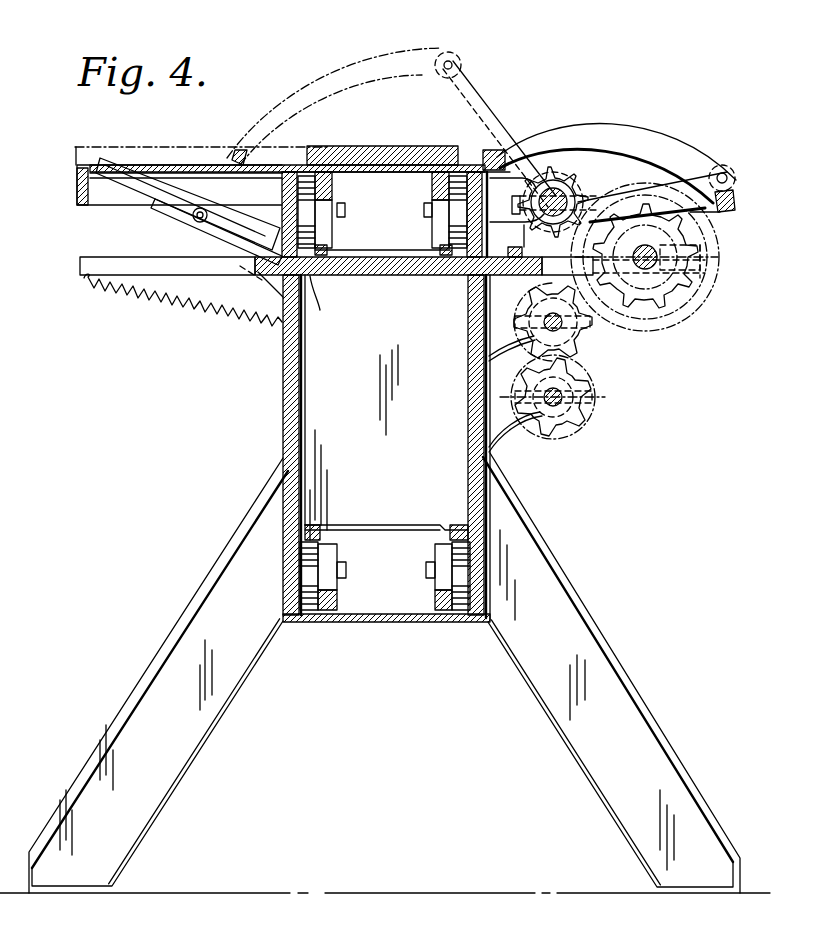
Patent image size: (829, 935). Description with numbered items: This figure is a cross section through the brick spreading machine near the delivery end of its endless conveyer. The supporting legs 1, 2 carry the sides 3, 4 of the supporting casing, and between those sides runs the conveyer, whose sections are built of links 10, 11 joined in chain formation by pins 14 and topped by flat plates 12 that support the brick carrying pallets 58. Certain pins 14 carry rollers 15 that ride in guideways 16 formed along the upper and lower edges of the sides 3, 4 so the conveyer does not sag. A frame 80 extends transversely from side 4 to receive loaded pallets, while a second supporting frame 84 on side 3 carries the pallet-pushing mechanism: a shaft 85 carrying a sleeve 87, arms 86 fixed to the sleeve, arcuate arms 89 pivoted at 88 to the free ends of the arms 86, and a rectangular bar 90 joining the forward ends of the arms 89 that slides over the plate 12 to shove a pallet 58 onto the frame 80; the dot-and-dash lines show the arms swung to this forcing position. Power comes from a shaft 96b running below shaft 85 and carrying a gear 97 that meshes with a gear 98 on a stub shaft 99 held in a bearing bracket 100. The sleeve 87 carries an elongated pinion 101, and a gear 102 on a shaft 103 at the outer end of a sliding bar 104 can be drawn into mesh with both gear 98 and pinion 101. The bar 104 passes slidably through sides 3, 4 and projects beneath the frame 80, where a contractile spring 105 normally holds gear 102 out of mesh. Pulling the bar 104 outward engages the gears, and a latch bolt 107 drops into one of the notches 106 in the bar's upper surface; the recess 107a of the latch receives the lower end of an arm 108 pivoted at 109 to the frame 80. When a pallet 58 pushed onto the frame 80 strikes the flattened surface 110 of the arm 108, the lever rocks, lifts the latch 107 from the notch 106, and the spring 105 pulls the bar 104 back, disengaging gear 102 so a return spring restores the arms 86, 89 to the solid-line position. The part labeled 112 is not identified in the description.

The supporting leg 1 is at (608, 688).
The supporting leg 2 is at (213, 692).
The side of supporting casing 3 is at (490, 454).
The side of supporting casing 4 is at (283, 416).
The link 10 is at (330, 553).
The link 11 is at (436, 552).
The flat plate 12 is at (392, 622).
The pin 14 is at (346, 572).
The roller 15 is at (306, 572).
The guideway 16 is at (316, 527).
The brick carrying pallet 58 is at (150, 160).
The frame 80 is at (77, 192).
The second supporting frame 84 is at (674, 194).
The shaft 85 is at (515, 214).
The arm 86 is at (522, 110).
The sleeve 87 is at (575, 200).
The pivot connection 88 is at (453, 55).
The arcuate arm 89 is at (360, 50).
The bar 90 is at (237, 150).
The shaft 96b is at (590, 398).
The gear 97 is at (588, 416).
The gear 98 is at (590, 342).
The stub shaft 99 is at (466, 360).
The bearing bracket 100 is at (488, 320).
The elongated pinion 101 is at (565, 180).
The gear 102 is at (662, 318).
The shaft 103 is at (658, 255).
The bar 104 is at (392, 280).
The contractile spring 105 is at (194, 320).
The notch 106 is at (338, 332).
The latch bolt 107 is at (257, 270).
The recess 107a is at (337, 293).
The pivoted arm 108 is at (168, 206).
The pivot 109 is at (196, 222).
The flattened surface 110 is at (112, 147).
The rail 112 is at (186, 187).